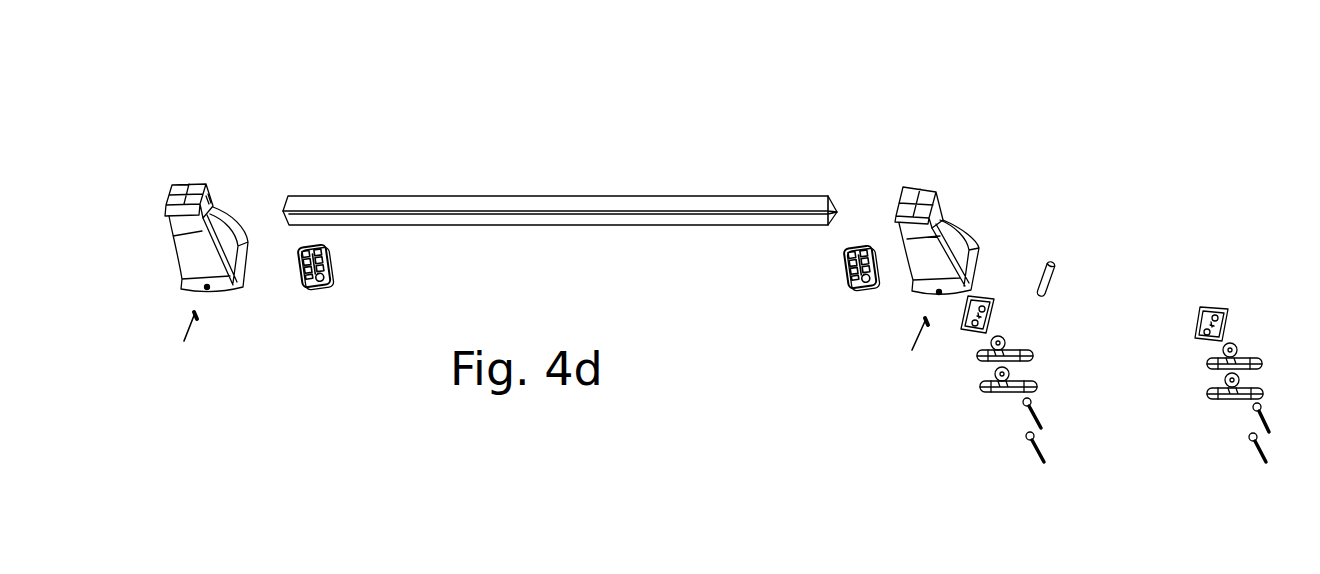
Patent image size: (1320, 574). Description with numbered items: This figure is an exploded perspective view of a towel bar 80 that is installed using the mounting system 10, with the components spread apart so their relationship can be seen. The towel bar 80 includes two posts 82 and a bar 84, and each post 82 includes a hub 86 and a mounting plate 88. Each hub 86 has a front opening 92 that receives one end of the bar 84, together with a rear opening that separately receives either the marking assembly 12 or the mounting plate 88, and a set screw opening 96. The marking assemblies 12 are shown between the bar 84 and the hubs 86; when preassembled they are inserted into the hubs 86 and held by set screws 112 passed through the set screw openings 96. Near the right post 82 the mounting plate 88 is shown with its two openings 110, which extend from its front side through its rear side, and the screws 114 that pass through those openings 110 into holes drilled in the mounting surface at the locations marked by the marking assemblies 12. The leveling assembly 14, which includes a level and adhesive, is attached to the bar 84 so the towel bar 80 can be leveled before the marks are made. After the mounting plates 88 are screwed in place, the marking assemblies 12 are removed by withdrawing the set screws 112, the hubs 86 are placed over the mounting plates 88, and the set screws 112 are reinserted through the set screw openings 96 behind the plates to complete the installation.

The mounting system 10 is at (818, 388).
The marking assembly 12 is at (353, 262).
The leveling assembly 14 is at (1071, 268).
The towel bar 80 is at (1121, 102).
The post 82 is at (186, 158).
The bar 84 is at (544, 177).
The hub 86 is at (197, 250).
The mounting plate 88 is at (985, 298).
The front opening 92 is at (210, 198).
The set screw opening 96 is at (209, 290).
The openings 110 is at (995, 327).
The set screw 112 is at (546, 354).
The screws 114 is at (1040, 412).